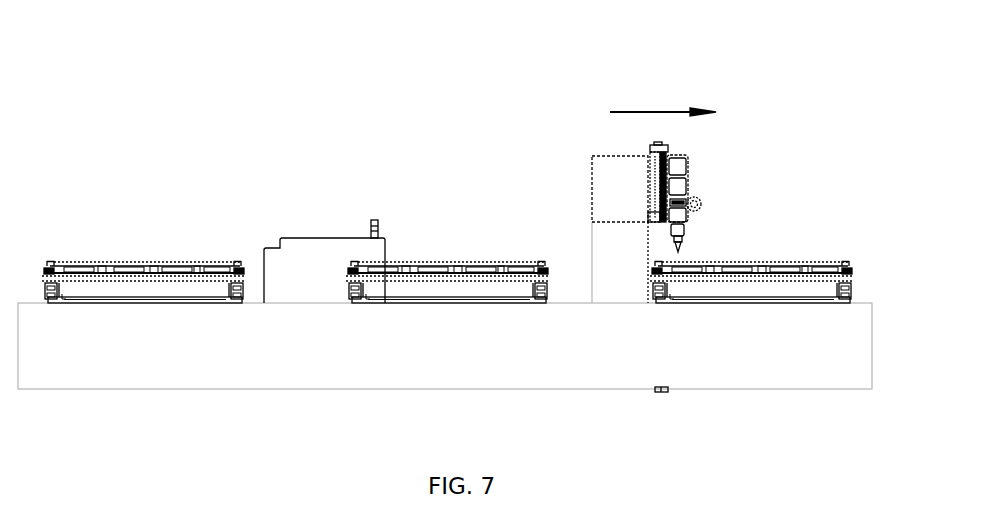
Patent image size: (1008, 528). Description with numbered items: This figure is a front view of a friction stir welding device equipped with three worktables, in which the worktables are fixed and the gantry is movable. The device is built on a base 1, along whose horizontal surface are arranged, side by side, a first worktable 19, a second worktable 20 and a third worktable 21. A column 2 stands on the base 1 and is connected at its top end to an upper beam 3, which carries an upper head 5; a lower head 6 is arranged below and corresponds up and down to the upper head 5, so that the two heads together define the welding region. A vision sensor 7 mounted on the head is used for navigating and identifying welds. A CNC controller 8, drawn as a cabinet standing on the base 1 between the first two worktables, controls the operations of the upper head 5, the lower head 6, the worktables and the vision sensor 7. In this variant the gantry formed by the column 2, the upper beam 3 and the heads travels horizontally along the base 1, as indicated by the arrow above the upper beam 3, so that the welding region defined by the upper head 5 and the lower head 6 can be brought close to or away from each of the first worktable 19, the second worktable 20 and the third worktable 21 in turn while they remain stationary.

The base 1 is at (270, 352).
The column 2 is at (608, 278).
The upper beam 3 is at (612, 178).
The upper head 5 is at (689, 167).
The lower head 6 is at (655, 388).
The vision sensor 7 is at (699, 205).
The CNC controller 8 is at (325, 246).
The first worktable 19 is at (822, 262).
The second worktable 20 is at (135, 265).
The third worktable 21 is at (447, 268).